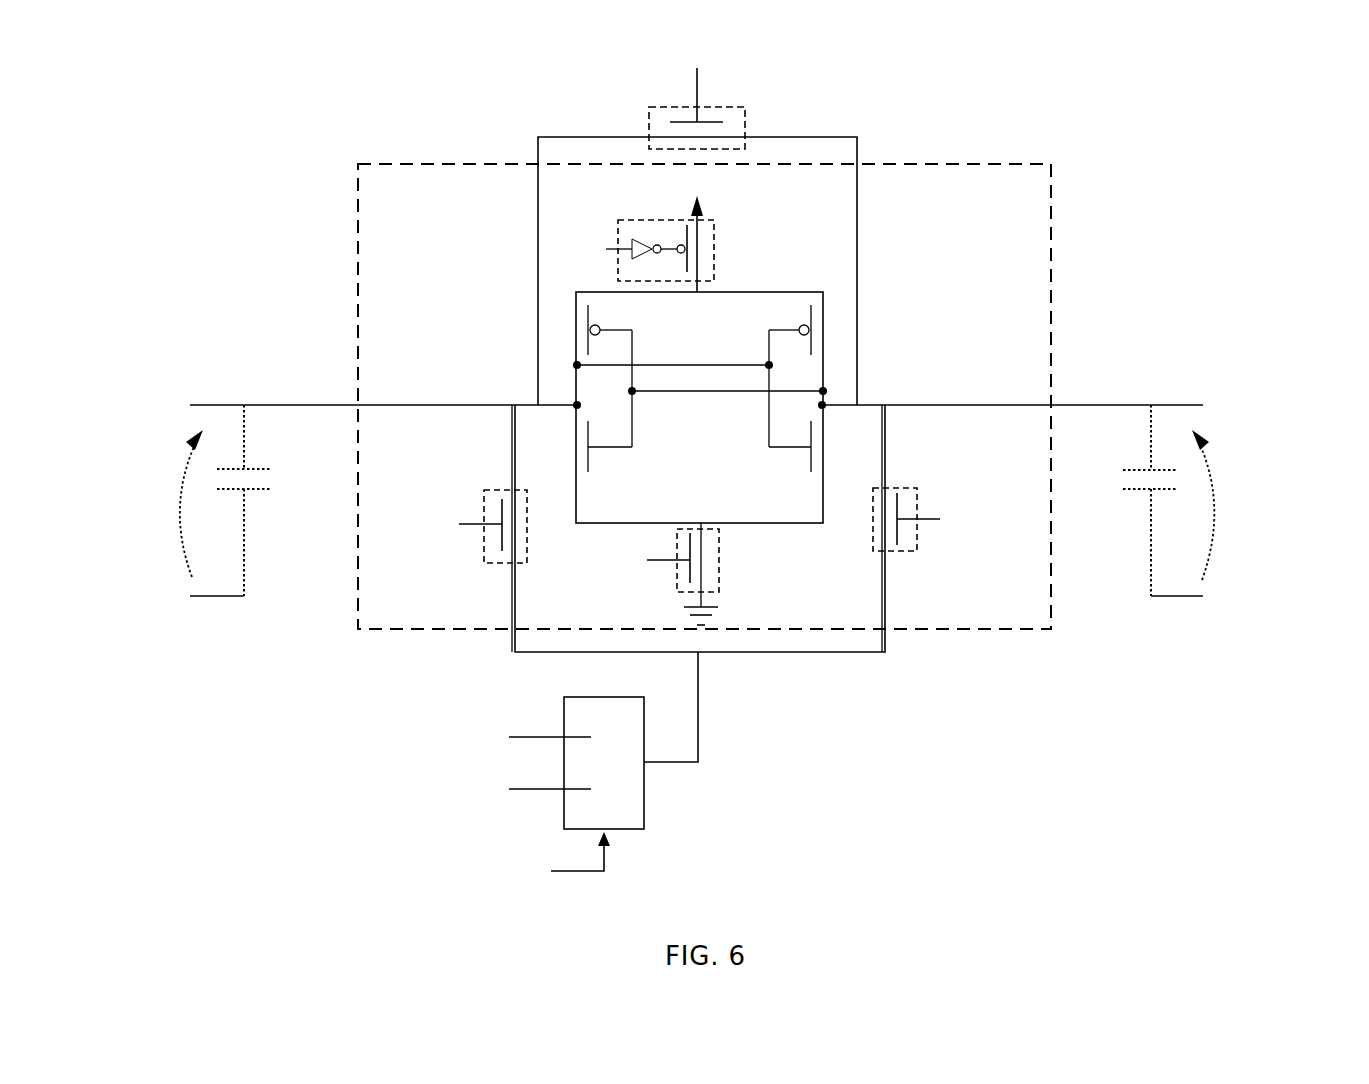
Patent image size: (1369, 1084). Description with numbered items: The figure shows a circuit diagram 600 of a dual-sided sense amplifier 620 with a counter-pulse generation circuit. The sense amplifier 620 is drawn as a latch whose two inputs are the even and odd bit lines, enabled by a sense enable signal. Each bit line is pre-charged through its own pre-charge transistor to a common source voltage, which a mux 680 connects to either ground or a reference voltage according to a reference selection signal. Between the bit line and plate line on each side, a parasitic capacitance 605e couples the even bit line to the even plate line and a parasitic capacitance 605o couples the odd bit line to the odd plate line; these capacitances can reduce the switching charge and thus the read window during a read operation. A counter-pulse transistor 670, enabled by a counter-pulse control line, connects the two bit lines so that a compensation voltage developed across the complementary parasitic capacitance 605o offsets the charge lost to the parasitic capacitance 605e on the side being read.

The circuit diagram 600 is at (140, 118).
The sense amplifier 620 is at (357, 212).
The counter-pulse transistor/switch 670 is at (748, 114).
The mux 680 is at (646, 808).
The parasitic capacitance 605e is at (257, 469).
The parasitic capacitance 605o is at (1136, 470).